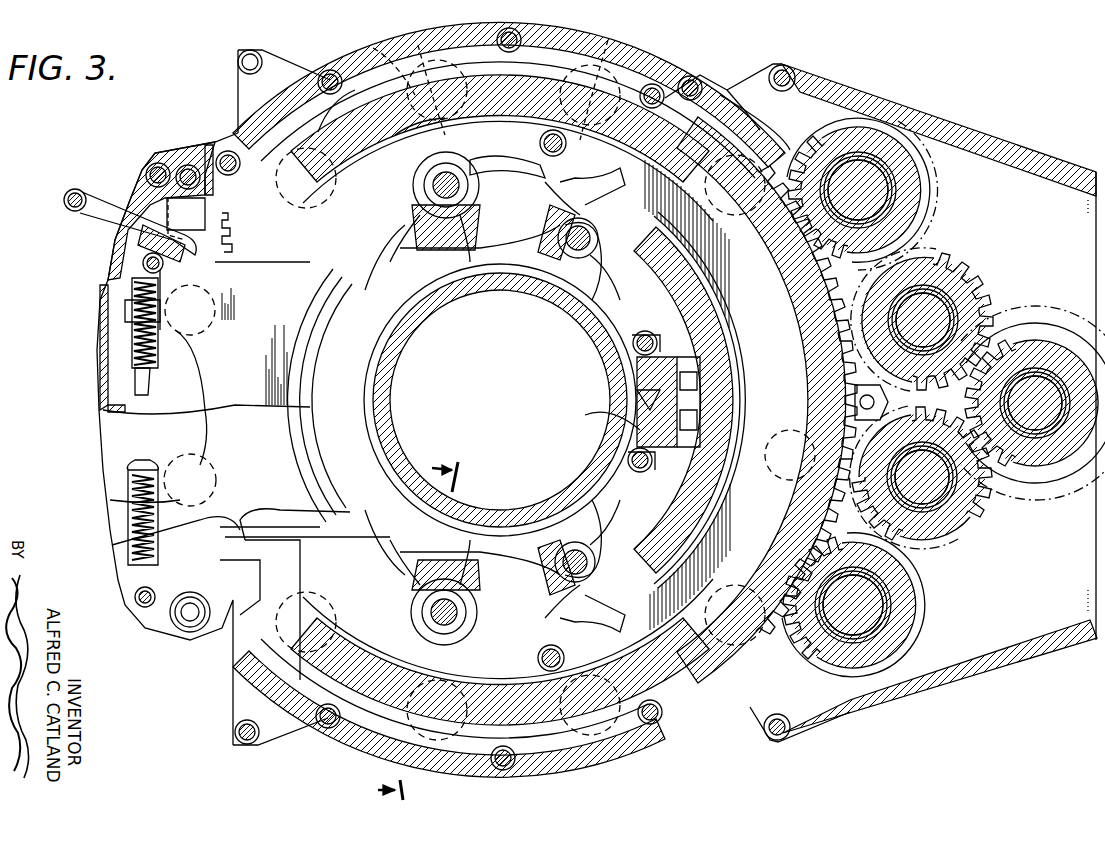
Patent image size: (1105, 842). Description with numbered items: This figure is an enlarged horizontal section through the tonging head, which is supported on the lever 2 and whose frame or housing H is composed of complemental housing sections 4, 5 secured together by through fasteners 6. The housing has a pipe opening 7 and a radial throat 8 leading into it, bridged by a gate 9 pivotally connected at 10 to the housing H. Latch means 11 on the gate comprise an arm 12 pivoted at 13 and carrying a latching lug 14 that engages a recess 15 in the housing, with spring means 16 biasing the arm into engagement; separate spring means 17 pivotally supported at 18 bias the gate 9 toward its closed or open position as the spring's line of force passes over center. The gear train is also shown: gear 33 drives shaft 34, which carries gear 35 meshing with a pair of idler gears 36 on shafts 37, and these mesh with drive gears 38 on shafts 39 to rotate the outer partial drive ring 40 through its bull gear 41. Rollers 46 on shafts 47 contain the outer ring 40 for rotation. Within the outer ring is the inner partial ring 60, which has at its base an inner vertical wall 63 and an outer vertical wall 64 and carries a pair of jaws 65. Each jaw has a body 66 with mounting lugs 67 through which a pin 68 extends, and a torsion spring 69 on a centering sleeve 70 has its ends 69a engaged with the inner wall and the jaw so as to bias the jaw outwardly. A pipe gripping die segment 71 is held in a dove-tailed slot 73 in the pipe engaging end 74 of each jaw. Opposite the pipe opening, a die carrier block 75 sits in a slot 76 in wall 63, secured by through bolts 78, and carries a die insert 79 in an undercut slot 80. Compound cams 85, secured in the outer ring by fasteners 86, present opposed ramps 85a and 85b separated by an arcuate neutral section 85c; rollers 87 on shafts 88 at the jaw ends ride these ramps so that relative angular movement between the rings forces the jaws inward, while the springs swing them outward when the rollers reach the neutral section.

The lever 2 is at (1012, 135).
The housing section 5 is at (715, 90).
The through fasteners 6 is at (322, 72).
The pipe opening 7 is at (645, 740).
The radial throat 8 is at (330, 530).
The gate 9 is at (100, 300).
The pivotal connection 10 is at (190, 630).
The latch means 11 is at (135, 238).
The arm 12 is at (95, 200).
The pivot 13 is at (225, 280).
The latching lug 14 is at (222, 152).
The recess 15 is at (172, 165).
The spring means 16 is at (134, 296).
The spring means 17 is at (130, 500).
The pivot support 18 is at (140, 610).
The gear 33 is at (1078, 505).
The shaft 34 is at (1033, 430).
The gear 35 is at (1035, 367).
The idler gears 36 is at (925, 265).
The shafts 37 is at (925, 300).
The drive gears 38 is at (915, 176).
The shafts 39 is at (860, 188).
The outer partial drive ring 40 is at (648, 105).
The bull gear 41 is at (745, 738).
The rollers 46 is at (208, 330).
The shafts 47 is at (566, 140).
The inner partial ring 60 is at (290, 140).
The inner vertical wall 63 is at (620, 465).
The outer vertical wall 64 is at (655, 550).
The jaws 65 is at (405, 260).
The body 66 is at (505, 270).
The mounting lugs 67 is at (555, 265).
The pin 68 is at (578, 250).
The torsion spring 69 is at (598, 232).
The spring ends 69a is at (555, 205).
The centering sleeve 70 is at (582, 258).
The pipe gripping die segment 71 is at (445, 200).
The slots 73 is at (405, 255).
The pipe engaging end 74 is at (420, 240).
The die carrier block 75 is at (606, 425).
The slot 76 is at (648, 335).
The through bolts 78 is at (632, 330).
The die insert 79 is at (640, 415).
The slot 80 is at (665, 385).
The compound cams 85 is at (345, 200).
The ramps 85a is at (365, 120).
The ramps 85b is at (480, 180).
The arcuate neutral section 85c is at (350, 755).
The fasteners 86 is at (330, 590).
The rollers 87 is at (478, 560).
The shaft 88 is at (448, 200).
The frame or housing H is at (628, 40).
The housing section 4 is at (398, 624).